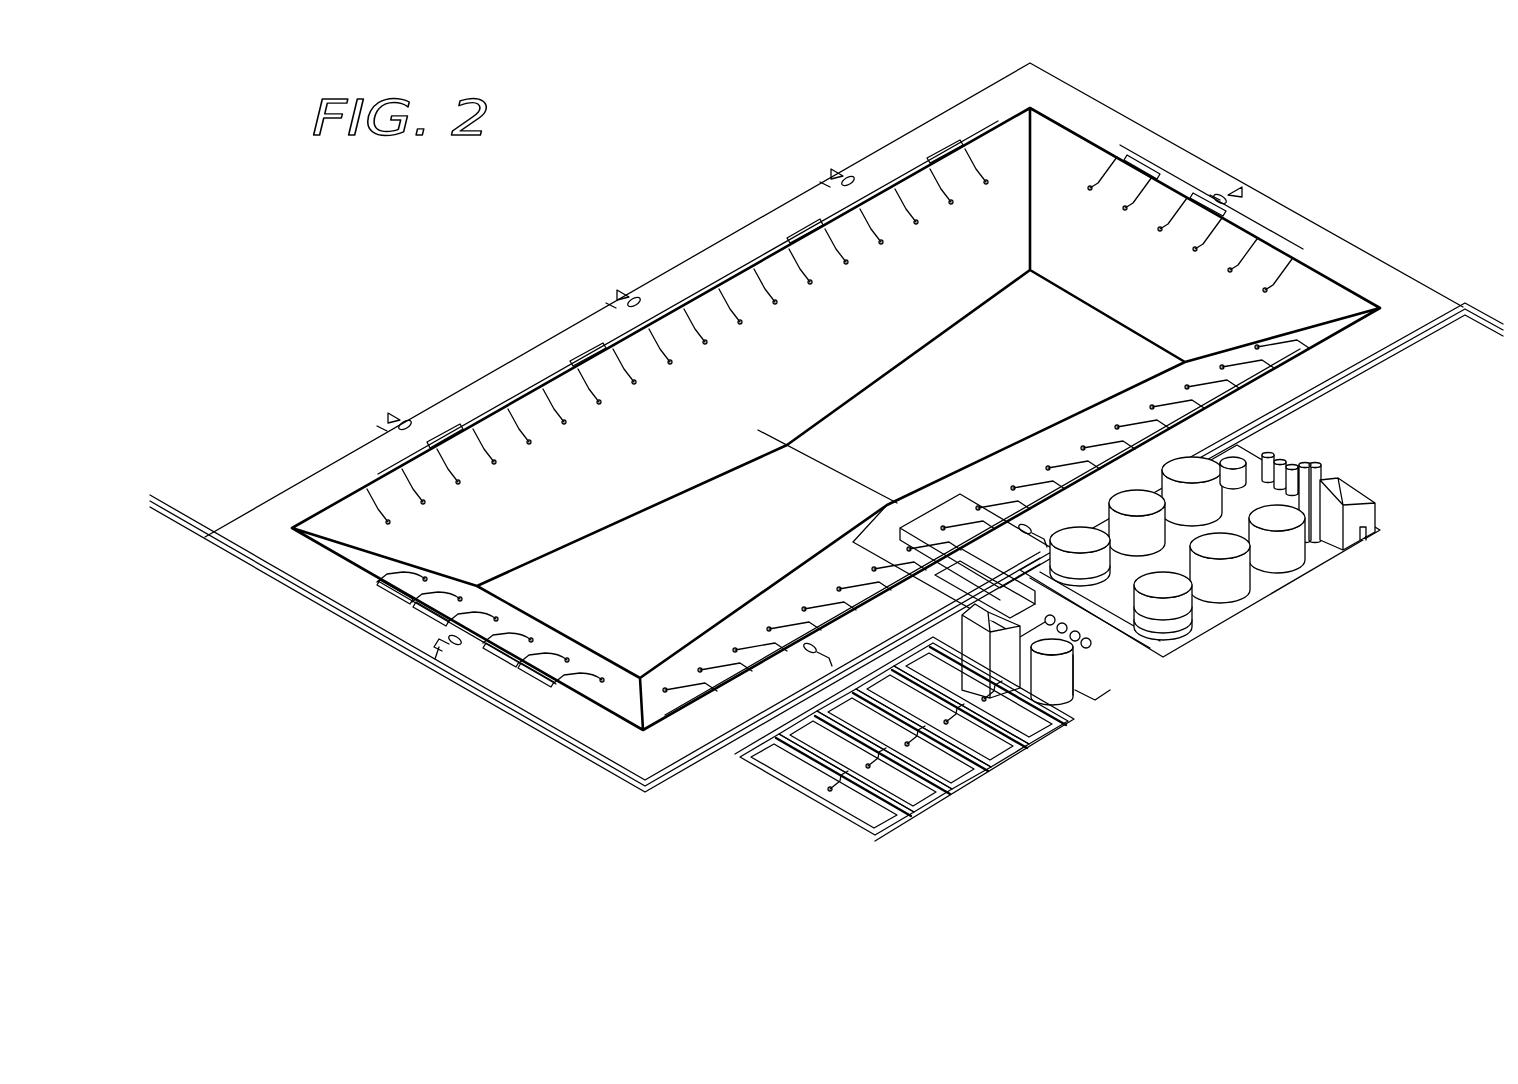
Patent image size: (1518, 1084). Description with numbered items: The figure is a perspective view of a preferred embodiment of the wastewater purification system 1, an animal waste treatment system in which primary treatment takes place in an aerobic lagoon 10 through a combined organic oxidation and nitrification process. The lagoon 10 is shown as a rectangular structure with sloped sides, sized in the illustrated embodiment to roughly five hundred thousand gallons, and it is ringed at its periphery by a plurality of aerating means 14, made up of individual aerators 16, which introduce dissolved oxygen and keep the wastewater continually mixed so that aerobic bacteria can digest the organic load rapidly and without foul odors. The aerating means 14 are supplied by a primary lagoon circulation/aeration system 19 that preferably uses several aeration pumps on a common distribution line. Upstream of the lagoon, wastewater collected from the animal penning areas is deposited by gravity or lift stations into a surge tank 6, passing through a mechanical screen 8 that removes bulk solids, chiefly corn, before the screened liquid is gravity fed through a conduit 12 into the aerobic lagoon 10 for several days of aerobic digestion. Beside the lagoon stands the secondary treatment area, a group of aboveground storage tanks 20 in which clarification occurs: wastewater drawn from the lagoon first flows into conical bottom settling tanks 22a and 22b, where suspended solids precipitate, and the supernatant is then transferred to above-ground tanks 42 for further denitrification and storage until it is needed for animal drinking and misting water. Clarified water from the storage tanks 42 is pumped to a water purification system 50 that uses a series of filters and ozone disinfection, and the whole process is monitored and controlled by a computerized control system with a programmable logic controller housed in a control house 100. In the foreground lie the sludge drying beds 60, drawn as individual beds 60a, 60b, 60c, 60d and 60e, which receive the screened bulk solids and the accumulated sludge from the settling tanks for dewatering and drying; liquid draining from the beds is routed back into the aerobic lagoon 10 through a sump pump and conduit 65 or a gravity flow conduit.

The wastewater purification system 1 is at (1258, 145).
The aerobic lagoon 10 is at (574, 398).
The conduit 12 is at (893, 597).
The aerating means 14 is at (798, 296).
The aerator 16 is at (786, 287).
The primary lagoon circulation/aeration system 19 is at (989, 603).
The aboveground storage tanks 20 is at (1318, 574).
The conical bottom settling tank 22a is at (1178, 593).
The conical bottom settling tank 22b is at (1078, 543).
The above-ground tanks 42 is at (1243, 584).
The water purification system 50 is at (1326, 451).
The control house 100 is at (1372, 517).
The mechanical screen 8 is at (1026, 651).
The surge tank 6 is at (1070, 672).
The sump pump and conduit 65 is at (656, 746).
The sludge drying beds 60 is at (911, 765).
The drying bed 60a is at (1052, 733).
The drying bed 60b is at (1013, 757).
The drying bed 60c is at (974, 779).
The drying bed 60d is at (935, 802).
The drying bed 60e is at (896, 825).